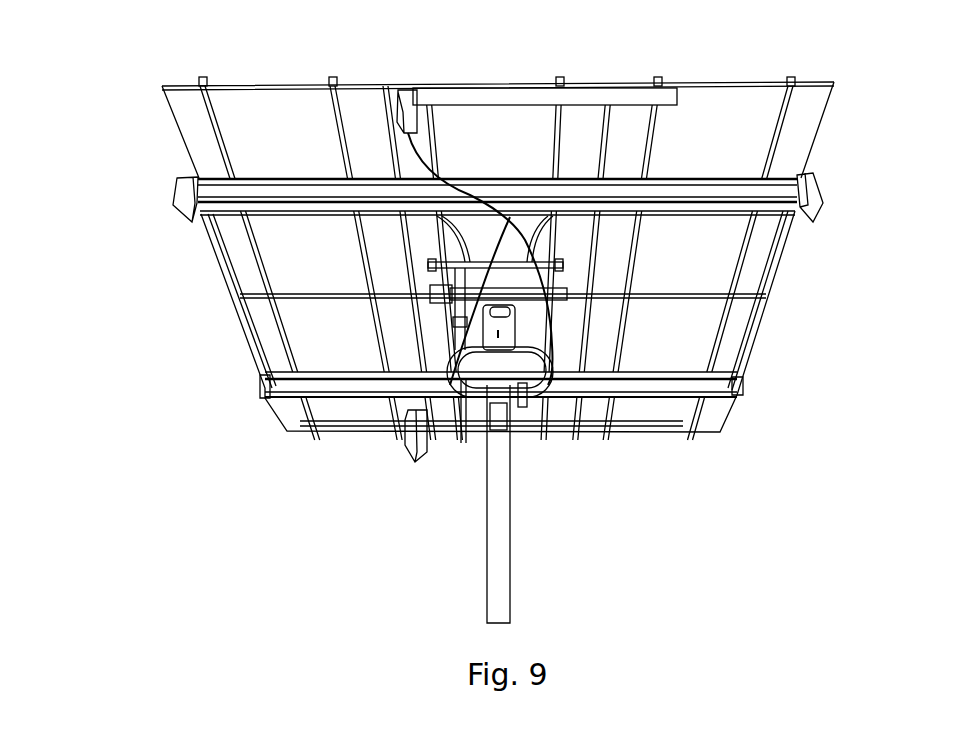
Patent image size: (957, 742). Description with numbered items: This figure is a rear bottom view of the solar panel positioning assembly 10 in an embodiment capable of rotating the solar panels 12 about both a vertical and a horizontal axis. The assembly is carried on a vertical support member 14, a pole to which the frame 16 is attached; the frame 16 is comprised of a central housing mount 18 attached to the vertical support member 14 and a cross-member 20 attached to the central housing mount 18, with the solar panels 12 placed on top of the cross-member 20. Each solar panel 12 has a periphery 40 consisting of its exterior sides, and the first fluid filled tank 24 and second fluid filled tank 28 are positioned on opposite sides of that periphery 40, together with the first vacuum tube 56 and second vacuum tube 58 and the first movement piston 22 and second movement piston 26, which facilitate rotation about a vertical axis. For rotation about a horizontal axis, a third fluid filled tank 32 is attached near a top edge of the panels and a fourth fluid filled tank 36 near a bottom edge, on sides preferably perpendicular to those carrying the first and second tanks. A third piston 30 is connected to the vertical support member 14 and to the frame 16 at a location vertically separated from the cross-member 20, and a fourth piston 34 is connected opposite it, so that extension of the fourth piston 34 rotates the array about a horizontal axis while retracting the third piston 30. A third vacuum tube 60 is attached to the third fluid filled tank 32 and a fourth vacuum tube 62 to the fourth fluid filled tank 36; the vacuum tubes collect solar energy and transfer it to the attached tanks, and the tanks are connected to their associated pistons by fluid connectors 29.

The solar panel positioning assembly 10 is at (93, 245).
The solar panel 12 is at (693, 112).
The vertical support member 14 is at (502, 512).
The frame 16 is at (257, 193).
The central housing mount 18 is at (500, 290).
The cross-member 20 is at (550, 292).
The first movement piston 22 is at (470, 378).
The first fluid filled tank 24 is at (183, 215).
The second movement piston 26 is at (547, 387).
The second fluid filled tank 28 is at (817, 187).
The fluid connectors 29 is at (435, 168).
The third piston 30 is at (460, 318).
The third fluid filled tank 32 is at (415, 445).
The fourth piston 34 is at (523, 403).
The fourth fluid filled tank 36 is at (403, 97).
The periphery 40 is at (260, 84).
The first vacuum tube 56 is at (238, 330).
The second vacuum tube 58 is at (787, 265).
The third vacuum tube 60 is at (657, 422).
The fourth vacuum tube 62 is at (505, 90).